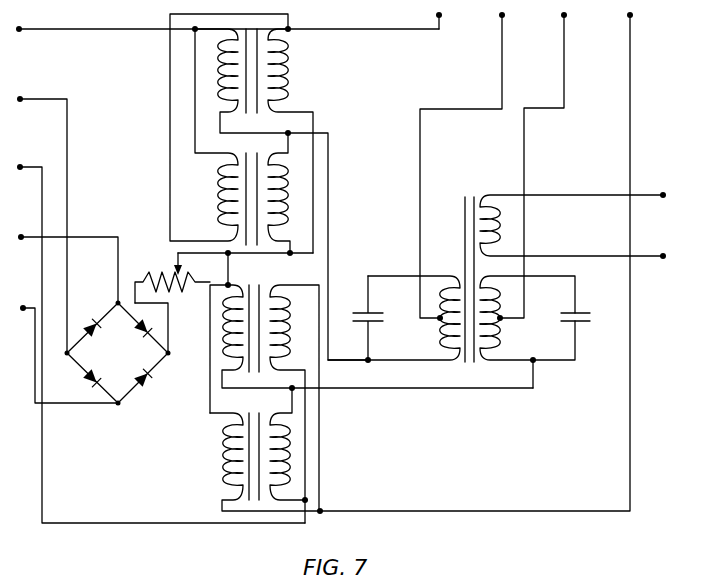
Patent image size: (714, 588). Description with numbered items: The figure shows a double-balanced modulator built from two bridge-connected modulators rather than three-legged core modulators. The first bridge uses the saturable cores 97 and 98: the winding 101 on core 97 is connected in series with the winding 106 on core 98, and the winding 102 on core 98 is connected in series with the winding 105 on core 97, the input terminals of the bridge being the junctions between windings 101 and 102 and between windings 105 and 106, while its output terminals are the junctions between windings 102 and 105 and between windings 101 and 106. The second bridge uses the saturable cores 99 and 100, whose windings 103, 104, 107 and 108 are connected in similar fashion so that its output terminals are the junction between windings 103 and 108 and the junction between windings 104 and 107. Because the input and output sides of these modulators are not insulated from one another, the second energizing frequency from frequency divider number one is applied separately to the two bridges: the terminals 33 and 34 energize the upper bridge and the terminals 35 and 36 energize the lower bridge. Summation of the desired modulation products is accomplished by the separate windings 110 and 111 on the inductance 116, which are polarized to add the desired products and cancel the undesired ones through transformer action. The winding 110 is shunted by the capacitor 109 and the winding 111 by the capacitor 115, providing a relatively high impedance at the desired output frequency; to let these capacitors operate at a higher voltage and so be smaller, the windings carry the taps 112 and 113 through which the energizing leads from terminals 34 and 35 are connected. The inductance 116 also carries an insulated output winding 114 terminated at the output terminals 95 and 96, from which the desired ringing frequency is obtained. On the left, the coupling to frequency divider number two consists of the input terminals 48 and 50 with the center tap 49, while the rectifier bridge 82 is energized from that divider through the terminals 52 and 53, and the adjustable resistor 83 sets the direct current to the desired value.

The terminal 33 is at (449, 23).
The terminal 34 is at (472, 166).
The terminal 35 is at (542, 166).
The terminal 36 is at (486, 261).
The input terminal 48 is at (23, 37).
The center tap 49 is at (23, 104).
The input terminal 50 is at (22, 172).
The terminal 52 is at (22, 243).
The terminal 53 is at (23, 290).
The rectifier bridge 82 is at (150, 366).
The adjustable resistor 83 is at (168, 288).
The output terminal 95 is at (669, 198).
The output terminal 96 is at (669, 256).
The saturable core 97 is at (254, 117).
The saturable core 98 is at (257, 245).
The saturable core 99 is at (253, 370).
The saturable core 100 is at (253, 494).
The winding 101 is at (218, 94).
The winding 102 is at (219, 211).
The winding 103 is at (220, 321).
The winding 104 is at (220, 458).
The winding 105 is at (293, 78).
The winding 106 is at (302, 209).
The winding 107 is at (301, 319).
The winding 108 is at (298, 461).
The capacitor 109 is at (364, 312).
The winding 110 is at (433, 343).
The winding 111 is at (503, 344).
The tap 112 is at (440, 300).
The tap 113 is at (502, 323).
The insulated output winding 114 is at (504, 242).
The capacitor 115 is at (594, 308).
The inductance 116 is at (468, 363).